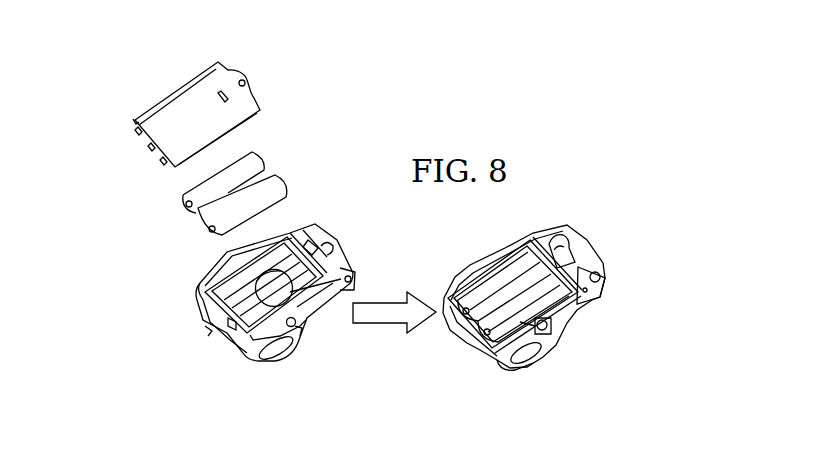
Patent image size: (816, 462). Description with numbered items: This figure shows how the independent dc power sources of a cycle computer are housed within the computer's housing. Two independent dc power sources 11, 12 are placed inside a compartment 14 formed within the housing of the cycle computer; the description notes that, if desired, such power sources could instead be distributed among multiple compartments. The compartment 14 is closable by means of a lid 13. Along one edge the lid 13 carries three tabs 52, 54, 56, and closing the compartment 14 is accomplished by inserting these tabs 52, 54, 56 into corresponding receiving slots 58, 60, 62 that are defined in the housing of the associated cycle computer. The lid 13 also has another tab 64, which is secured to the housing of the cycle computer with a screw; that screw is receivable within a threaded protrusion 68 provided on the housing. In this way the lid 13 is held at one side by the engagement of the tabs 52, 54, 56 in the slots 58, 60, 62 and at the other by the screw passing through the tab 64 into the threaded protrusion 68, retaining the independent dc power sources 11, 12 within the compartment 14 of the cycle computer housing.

The independent dc power source 11 is at (276, 292).
The independent dc power source 12 is at (257, 181).
The lid 13 is at (213, 117).
The compartment 14 is at (220, 314).
The tab 52 is at (148, 147).
The tab 54 is at (133, 122).
The tab 56 is at (170, 163).
The receiving slot 58 is at (207, 328).
The receiving slot 60 is at (200, 293).
The receiving slot 62 is at (242, 342).
The tab 64 is at (244, 77).
The threaded protrusion 68 is at (566, 248).